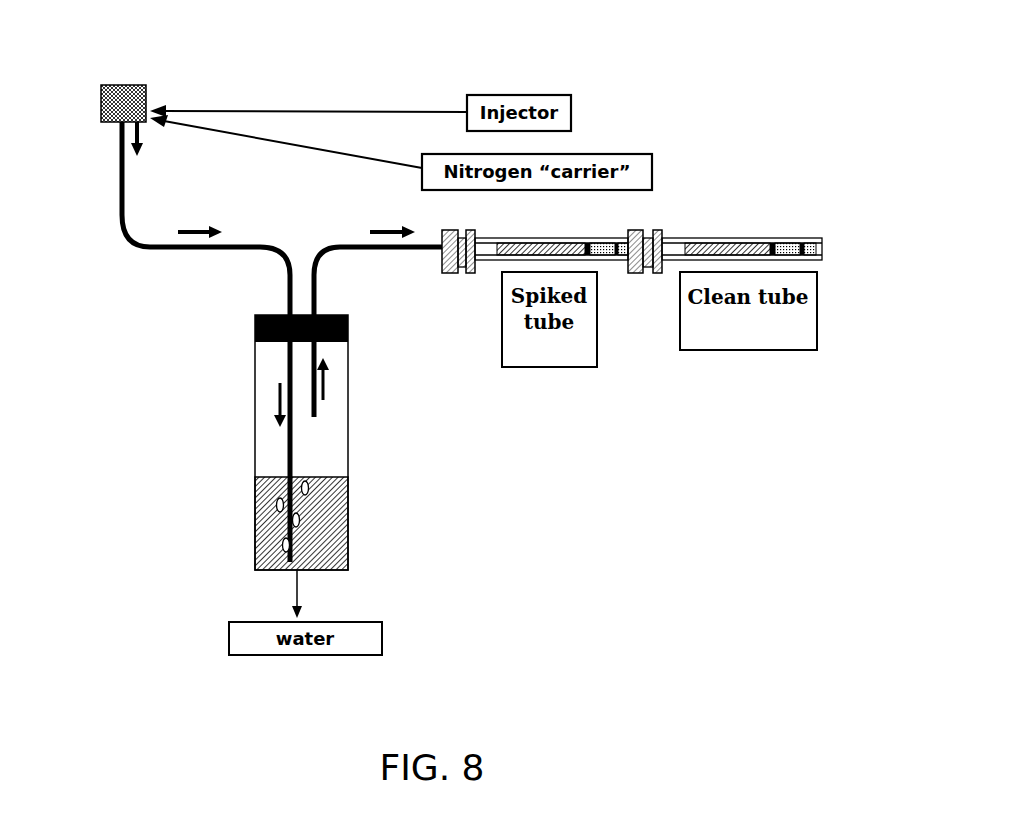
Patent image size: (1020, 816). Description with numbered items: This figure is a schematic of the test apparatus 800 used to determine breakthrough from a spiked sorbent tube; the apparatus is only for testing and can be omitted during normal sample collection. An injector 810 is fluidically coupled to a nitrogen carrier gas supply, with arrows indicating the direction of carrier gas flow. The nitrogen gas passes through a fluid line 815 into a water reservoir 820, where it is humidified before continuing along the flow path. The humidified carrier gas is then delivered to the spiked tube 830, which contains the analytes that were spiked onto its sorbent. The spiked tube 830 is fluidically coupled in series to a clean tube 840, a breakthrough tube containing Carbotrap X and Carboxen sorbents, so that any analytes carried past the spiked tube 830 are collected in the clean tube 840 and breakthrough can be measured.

The apparatus 800 is at (578, 525).
The injector 810 is at (125, 85).
The fluid line 815 is at (178, 248).
The water reservoir 820 is at (363, 310).
The spiked tube 830 is at (588, 258).
The clean tube 840 is at (727, 250).